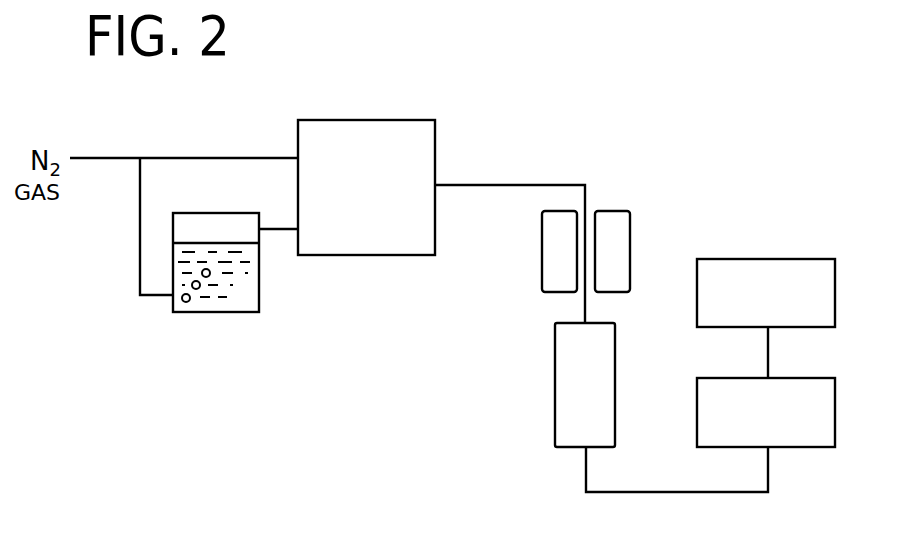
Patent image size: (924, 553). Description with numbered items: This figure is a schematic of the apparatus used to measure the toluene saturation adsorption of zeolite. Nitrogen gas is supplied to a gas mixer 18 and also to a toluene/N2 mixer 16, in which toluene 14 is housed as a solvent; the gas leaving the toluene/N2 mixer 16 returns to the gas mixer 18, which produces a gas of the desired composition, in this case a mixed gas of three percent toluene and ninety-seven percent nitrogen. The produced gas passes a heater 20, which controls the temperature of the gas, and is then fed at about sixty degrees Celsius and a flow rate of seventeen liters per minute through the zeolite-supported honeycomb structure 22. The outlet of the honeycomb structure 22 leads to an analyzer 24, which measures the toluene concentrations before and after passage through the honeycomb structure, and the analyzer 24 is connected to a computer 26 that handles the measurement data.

The toluene 14 is at (240, 297).
The toluene/N2 mixer 16 is at (217, 313).
The gas mixer 18 is at (362, 120).
The heater 20 is at (619, 211).
The zeolite-supported honeycomb structure 22 is at (555, 377).
The analyzer 24 is at (817, 447).
The computer 26 is at (812, 259).